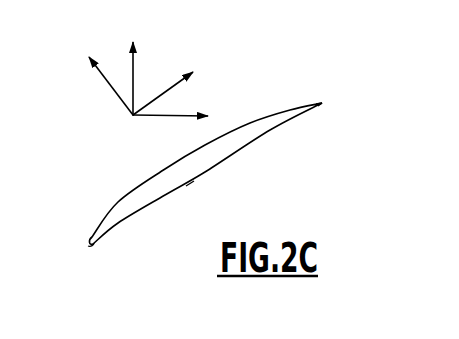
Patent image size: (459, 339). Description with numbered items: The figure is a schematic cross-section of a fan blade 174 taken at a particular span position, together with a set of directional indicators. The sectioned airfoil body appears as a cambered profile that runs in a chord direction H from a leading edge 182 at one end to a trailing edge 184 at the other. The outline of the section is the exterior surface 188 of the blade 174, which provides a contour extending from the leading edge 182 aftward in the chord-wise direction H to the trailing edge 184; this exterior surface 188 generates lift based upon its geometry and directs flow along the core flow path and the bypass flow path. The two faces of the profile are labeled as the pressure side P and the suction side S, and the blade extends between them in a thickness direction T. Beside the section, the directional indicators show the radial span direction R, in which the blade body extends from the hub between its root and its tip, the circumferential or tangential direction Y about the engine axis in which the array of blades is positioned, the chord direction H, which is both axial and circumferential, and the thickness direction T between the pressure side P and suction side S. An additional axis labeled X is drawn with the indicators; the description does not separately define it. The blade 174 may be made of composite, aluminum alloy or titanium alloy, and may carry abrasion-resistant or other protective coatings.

The fan blade 174 is at (266, 97).
The leading edge 182 is at (89, 245).
The trailing edge 184 is at (322, 103).
The exterior surface 188 is at (191, 184).
The suction side S is at (166, 169).
The pressure side P is at (163, 196).
The X axis X is at (163, 118).
The circumferential or tangential direction Y is at (135, 68).
The thickness direction T is at (104, 80).
The chord direction H is at (175, 85).
The radial span direction R is at (132, 120).